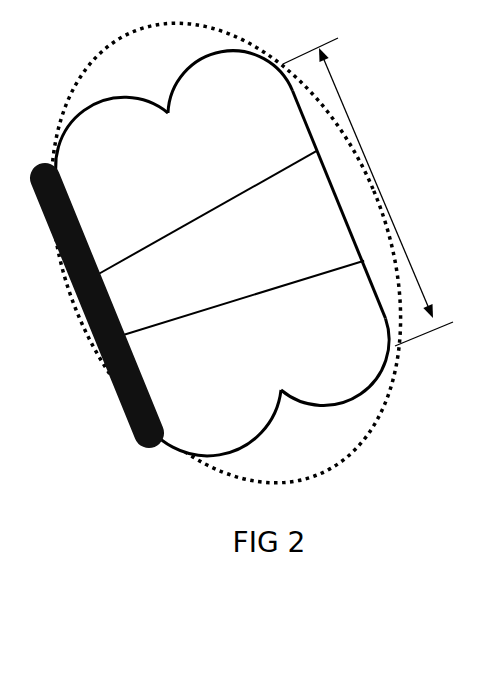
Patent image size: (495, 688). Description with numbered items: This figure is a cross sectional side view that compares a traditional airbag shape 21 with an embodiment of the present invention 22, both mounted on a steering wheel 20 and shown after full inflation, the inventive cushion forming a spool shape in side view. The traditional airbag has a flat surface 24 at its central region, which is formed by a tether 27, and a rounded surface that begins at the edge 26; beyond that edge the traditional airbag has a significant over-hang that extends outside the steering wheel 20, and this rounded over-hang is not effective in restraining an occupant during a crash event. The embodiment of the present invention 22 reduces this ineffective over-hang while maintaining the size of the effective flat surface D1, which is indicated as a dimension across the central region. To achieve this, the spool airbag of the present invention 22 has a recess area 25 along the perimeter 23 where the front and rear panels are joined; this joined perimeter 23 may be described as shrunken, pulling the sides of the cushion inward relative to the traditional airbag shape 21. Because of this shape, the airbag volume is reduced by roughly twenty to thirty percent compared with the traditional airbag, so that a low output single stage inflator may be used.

The steering wheel 20 is at (105, 360).
The traditional airbag shape 21 is at (78, 80).
The embodiment of the present invention 22 is at (213, 57).
The joined perimeter 23 is at (132, 33).
The flat surface 24 is at (345, 228).
The recess area 25 is at (292, 421).
The edge 26 is at (395, 347).
The tether 27 is at (228, 203).
The effective flat surface D1 is at (368, 192).